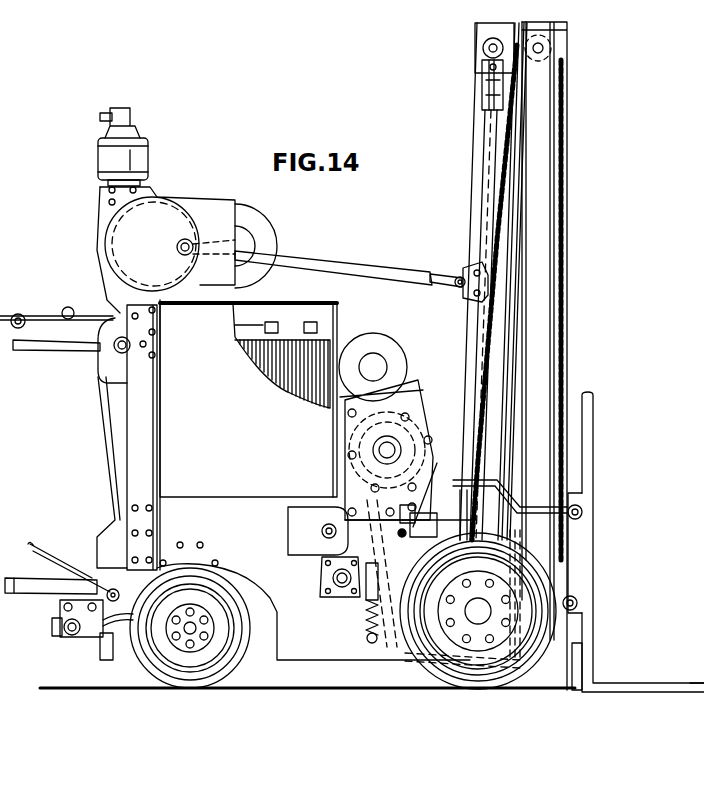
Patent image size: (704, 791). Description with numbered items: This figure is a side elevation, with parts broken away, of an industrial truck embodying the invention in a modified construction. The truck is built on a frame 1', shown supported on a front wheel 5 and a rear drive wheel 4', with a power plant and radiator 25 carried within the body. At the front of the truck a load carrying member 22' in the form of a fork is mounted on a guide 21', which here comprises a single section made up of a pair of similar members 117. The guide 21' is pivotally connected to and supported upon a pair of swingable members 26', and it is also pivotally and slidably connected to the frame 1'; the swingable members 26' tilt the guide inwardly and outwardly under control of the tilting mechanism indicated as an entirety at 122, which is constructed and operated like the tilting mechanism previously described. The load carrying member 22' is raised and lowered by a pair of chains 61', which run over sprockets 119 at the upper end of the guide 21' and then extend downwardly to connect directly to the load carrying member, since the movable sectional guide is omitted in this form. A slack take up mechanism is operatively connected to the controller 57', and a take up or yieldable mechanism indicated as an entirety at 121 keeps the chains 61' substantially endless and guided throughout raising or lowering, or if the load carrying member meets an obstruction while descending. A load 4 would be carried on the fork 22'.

The frame 1' is at (313, 590).
The load 4 is at (697, 668).
The rear drive wheel 4' is at (477, 611).
The front wheel 5 is at (236, 673).
The guide 21' is at (527, 341).
The load carrying member 22' is at (643, 542).
The radiator 25 is at (281, 356).
The swingable members 26' is at (361, 255).
The controller 57' is at (301, 531).
The chains 61' is at (479, 292).
The similar members 117 is at (540, 194).
The sprockets 119 is at (536, 64).
The take up or yieldable mechanism 121 is at (347, 628).
The tilting mechanism 122 is at (166, 250).